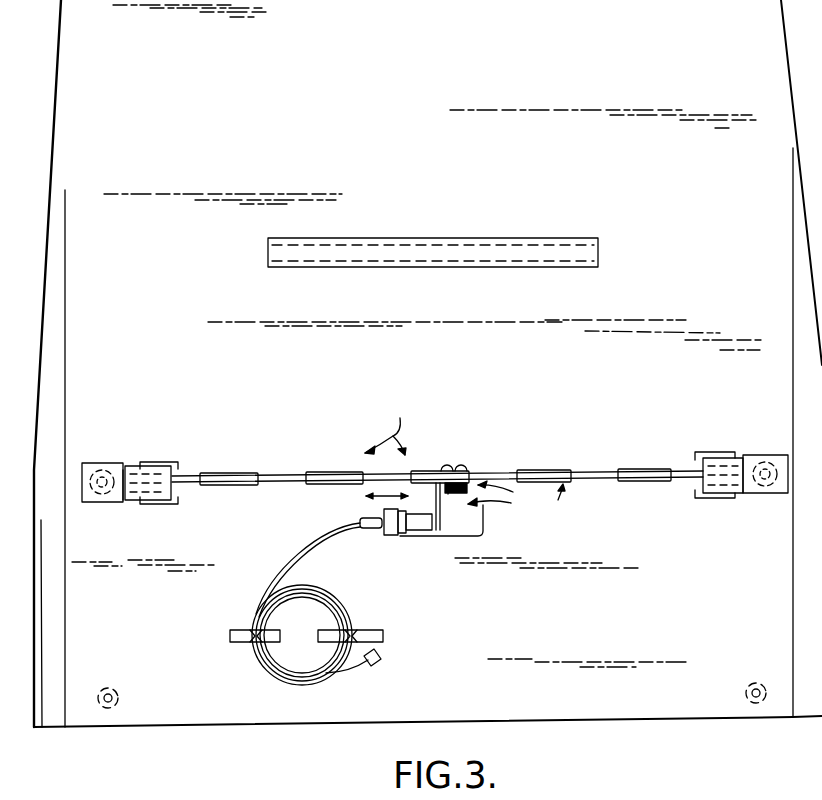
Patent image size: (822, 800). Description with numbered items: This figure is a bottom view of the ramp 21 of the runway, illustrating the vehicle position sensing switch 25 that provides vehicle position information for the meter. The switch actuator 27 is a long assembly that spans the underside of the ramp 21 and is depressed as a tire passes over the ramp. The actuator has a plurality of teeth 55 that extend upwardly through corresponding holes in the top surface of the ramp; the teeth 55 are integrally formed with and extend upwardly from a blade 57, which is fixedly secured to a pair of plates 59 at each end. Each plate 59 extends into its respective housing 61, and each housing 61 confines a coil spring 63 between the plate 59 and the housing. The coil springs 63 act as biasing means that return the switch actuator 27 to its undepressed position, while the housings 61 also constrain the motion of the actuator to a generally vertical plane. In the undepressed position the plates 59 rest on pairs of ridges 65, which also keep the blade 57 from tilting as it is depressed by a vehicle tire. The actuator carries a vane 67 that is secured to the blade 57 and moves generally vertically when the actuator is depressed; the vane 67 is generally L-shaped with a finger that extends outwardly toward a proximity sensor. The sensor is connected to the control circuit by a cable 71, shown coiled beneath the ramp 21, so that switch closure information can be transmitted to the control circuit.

The ramp 21 is at (173, 82).
The switch 25 is at (555, 504).
The switch actuator 27 is at (385, 425).
The teeth 55 is at (135, 467).
The blade 57 is at (276, 484).
The plate 59 is at (132, 501).
The housing 61 is at (86, 462).
The coil spring 63 is at (117, 500).
The ridges 65 is at (177, 462).
The vane 67 is at (436, 508).
The cable 71 is at (322, 544).